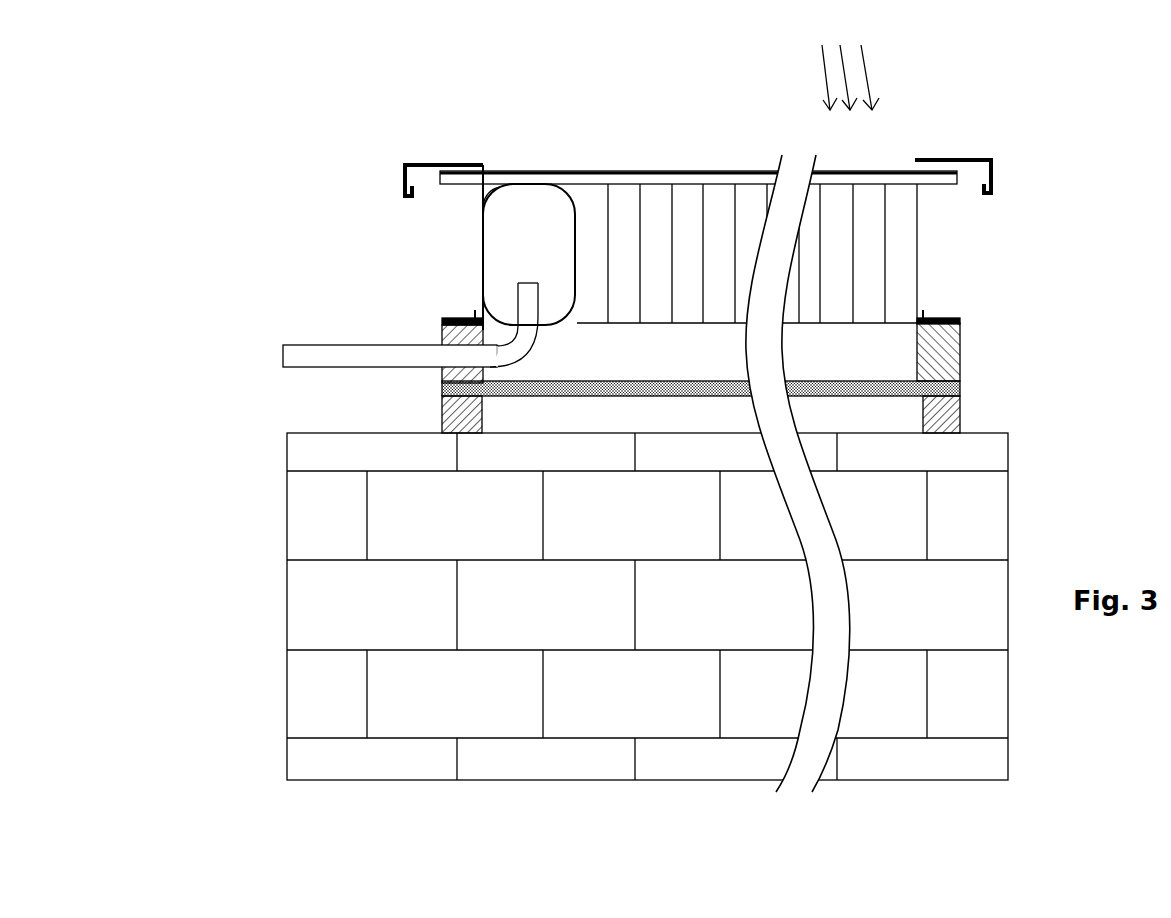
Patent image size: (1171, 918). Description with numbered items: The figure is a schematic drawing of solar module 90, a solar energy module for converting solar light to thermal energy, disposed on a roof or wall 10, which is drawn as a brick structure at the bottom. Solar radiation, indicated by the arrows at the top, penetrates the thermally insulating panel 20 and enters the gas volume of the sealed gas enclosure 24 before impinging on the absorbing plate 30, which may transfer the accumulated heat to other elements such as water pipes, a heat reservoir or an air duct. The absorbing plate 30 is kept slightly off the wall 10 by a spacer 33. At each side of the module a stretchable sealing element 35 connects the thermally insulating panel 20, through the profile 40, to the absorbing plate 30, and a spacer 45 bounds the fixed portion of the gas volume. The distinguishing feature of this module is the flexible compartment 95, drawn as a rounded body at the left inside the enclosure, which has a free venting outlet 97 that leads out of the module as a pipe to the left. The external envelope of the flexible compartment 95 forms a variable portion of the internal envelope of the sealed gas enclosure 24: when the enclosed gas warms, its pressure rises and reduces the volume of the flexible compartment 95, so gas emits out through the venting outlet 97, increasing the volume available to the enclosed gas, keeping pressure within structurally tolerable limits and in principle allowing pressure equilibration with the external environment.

The wall 10 is at (591, 606).
The thermally insulating panel 20 is at (650, 203).
The sealed gas enclosure 24 is at (820, 354).
The absorbing plate 30 is at (749, 381).
The spacer 33 is at (756, 417).
The stretchable sealing element 35 is at (746, 353).
The profile 40 is at (1025, 130).
The spacer 45 is at (746, 313).
The solar module 90 is at (537, 155).
The flexible compartment 95 is at (626, 135).
The venting outlet 97 is at (354, 313).